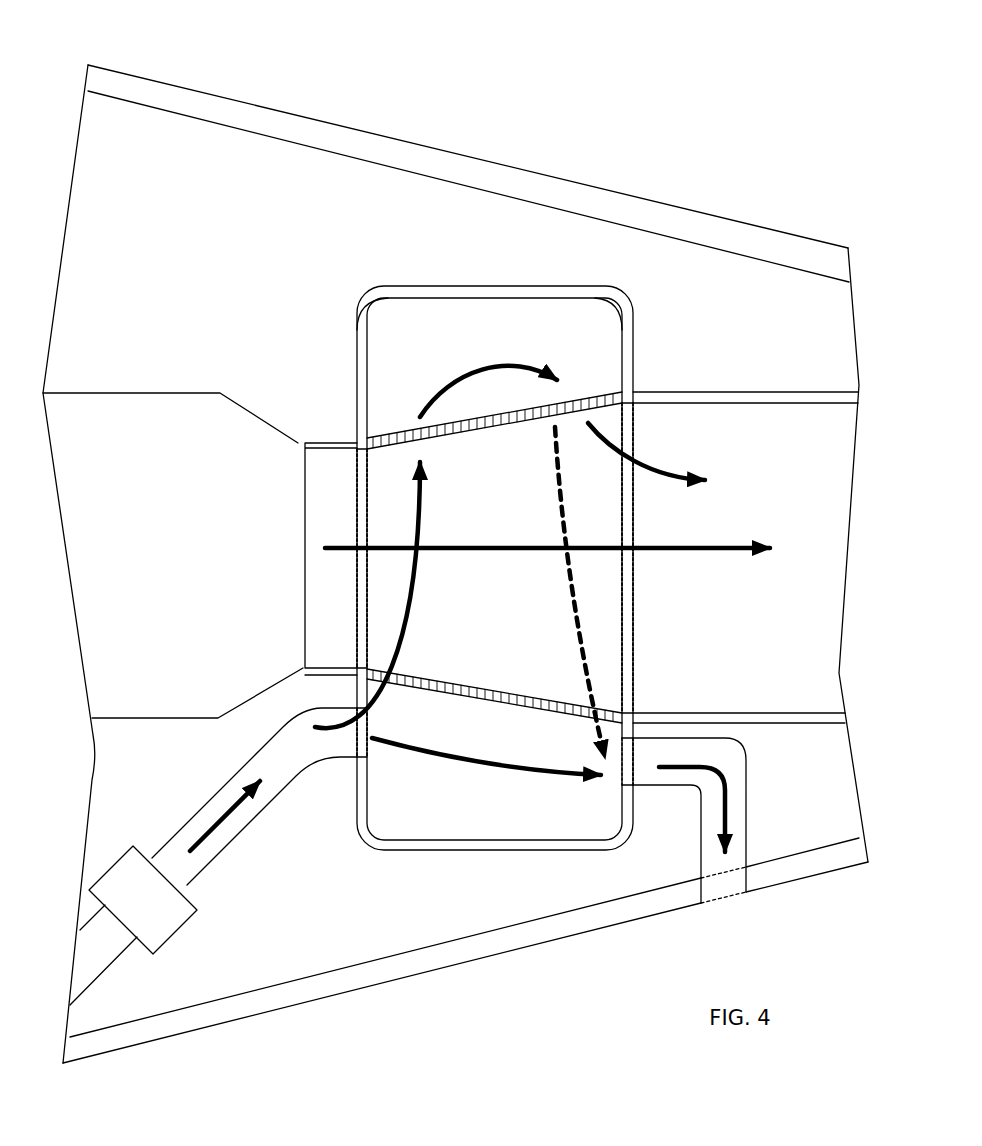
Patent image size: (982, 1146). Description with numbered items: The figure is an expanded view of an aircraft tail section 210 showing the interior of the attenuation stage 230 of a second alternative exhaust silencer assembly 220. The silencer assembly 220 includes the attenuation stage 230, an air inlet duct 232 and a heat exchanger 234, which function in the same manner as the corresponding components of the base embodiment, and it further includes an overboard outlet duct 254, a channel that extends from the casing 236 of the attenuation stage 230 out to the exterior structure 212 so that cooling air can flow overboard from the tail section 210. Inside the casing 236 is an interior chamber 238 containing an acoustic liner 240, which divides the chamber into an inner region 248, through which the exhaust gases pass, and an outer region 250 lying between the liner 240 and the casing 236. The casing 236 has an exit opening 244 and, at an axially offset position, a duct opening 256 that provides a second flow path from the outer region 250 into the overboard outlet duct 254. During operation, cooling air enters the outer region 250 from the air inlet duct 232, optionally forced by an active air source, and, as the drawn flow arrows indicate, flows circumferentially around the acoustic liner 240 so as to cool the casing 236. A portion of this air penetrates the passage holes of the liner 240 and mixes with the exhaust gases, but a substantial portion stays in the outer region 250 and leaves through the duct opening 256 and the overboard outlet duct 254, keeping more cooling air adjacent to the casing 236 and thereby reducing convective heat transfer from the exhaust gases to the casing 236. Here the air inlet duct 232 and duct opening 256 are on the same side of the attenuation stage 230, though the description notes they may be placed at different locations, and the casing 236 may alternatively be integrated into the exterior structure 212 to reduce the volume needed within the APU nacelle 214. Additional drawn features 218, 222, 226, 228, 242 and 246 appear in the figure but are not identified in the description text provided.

The aircraft tail section 210 is at (616, 80).
The exterior structure 212 is at (367, 125).
The APU nacelle 214 is at (220, 155).
The inlet duct 218 is at (312, 441).
The exhaust silencer assembly 220 is at (375, 910).
The outlet duct 222 is at (764, 390).
The upstream housing region 226 is at (163, 418).
The gas flow direction 228 is at (745, 545).
The attenuation stage 230 is at (494, 272).
The air inlet duct 232 is at (240, 838).
The heat exchanger 234 is at (166, 918).
The casing 236 is at (400, 293).
The interior chamber 238 is at (598, 326).
The acoustic liner 240 is at (468, 427).
The inlet screen 242 is at (350, 470).
The exit opening 244 is at (641, 624).
The conduit opening 246 is at (370, 748).
The inner region 248 is at (484, 601).
The outer region 250 is at (400, 344).
The overboard outlet duct 254 is at (746, 784).
The duct opening 256 is at (638, 782).